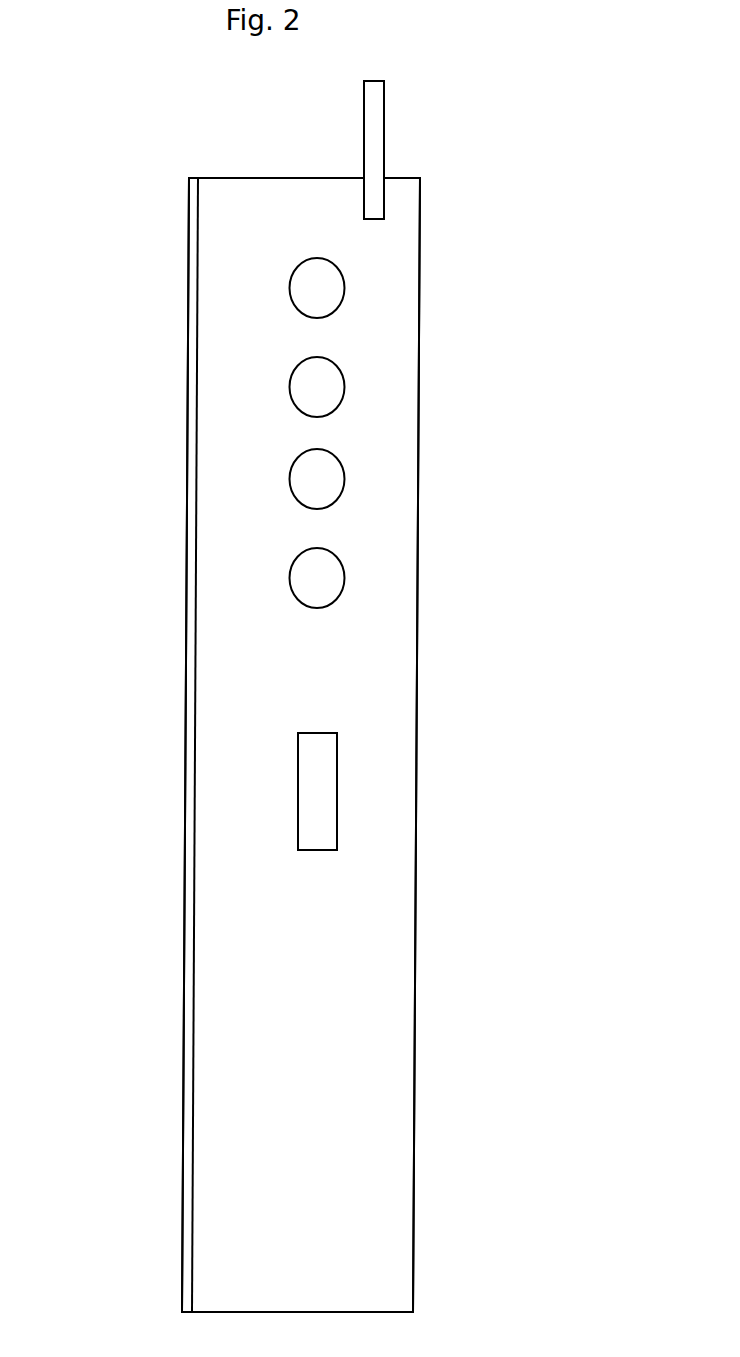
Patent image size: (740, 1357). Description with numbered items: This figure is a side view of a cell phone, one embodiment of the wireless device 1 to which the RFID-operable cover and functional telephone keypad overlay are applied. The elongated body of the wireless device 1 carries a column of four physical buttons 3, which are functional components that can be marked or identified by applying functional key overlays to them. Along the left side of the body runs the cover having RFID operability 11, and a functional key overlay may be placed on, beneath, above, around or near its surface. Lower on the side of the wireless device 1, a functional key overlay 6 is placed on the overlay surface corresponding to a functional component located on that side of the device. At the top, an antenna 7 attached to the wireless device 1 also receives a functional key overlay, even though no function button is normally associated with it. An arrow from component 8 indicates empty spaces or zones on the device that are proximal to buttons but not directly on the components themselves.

The wireless device 1 is at (214, 159).
The physical buttons 3 is at (282, 315).
The functional key overlay 6 is at (322, 867).
The antenna 7 is at (379, 132).
The empty spaces or zones 8 is at (232, 1223).
The cover having RFID operability 11 is at (188, 300).